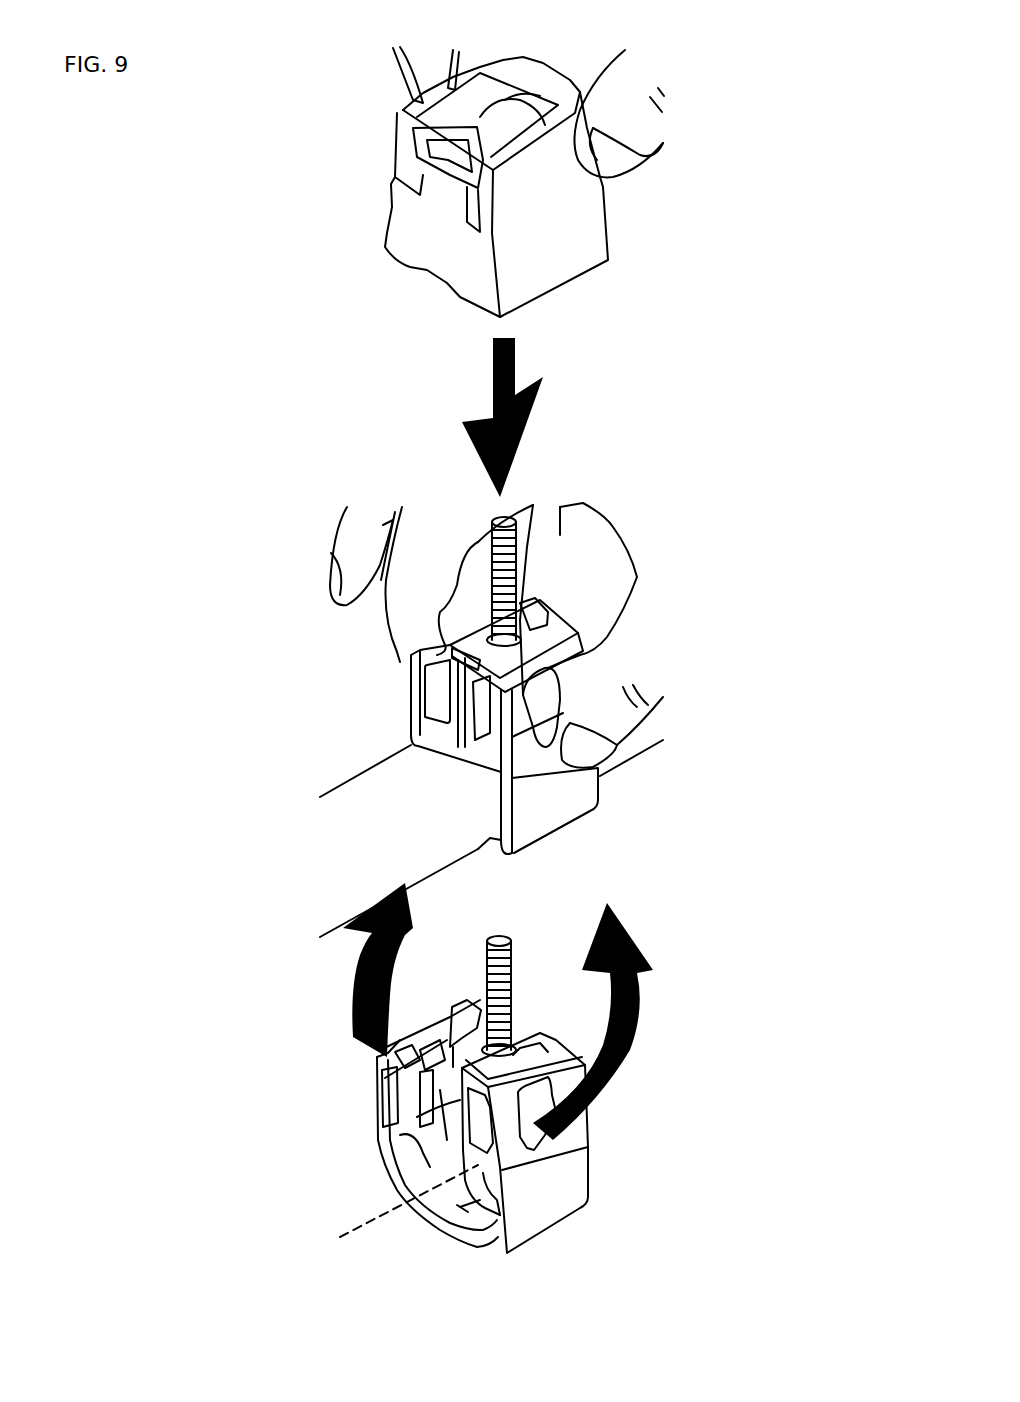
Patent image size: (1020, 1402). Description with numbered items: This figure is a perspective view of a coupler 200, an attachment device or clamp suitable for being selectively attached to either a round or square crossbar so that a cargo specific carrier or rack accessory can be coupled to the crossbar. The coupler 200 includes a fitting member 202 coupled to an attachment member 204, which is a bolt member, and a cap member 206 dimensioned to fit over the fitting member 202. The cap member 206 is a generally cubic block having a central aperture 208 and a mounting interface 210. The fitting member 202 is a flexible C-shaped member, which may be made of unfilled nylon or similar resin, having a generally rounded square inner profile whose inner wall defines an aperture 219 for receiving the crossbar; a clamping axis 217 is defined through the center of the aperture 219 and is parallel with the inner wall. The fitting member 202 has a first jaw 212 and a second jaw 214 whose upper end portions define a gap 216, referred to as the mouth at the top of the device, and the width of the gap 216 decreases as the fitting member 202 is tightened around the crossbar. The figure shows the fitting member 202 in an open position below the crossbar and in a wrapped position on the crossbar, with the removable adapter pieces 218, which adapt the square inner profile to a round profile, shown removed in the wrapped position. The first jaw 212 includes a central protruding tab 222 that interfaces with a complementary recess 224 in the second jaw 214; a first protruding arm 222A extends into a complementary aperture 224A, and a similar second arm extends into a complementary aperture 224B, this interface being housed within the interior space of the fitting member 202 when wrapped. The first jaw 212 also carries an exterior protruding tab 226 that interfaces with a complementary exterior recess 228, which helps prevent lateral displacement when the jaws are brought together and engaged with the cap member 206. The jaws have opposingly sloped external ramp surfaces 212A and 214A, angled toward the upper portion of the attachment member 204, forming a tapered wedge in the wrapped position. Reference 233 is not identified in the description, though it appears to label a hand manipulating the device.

The coupler 200 is at (293, 230).
The fitting member 202 is at (678, 757).
The attachment member 204 is at (535, 522).
The cap member 206 is at (632, 257).
The central aperture 208 is at (477, 72).
The mounting interface 210 is at (536, 135).
The first jaw 212 is at (588, 1150).
The external ramp surface 212A is at (575, 652).
The second jaw 214 is at (378, 1127).
The external ramp surface 214A is at (437, 653).
The gap 216 is at (466, 983).
The clamping axis 217 is at (350, 1232).
The adapter pieces 218 is at (435, 1200).
The aperture 219 is at (454, 1215).
The central protruding tab 222 is at (522, 1045).
The first protruding arm 222A is at (473, 1167).
The recess 224 is at (434, 1040).
The aperture 224A is at (430, 1080).
The aperture 224B is at (448, 1018).
The exterior protruding tab 226 is at (598, 1063).
The exterior recess 228 is at (403, 1058).
The hand 233 is at (362, 645).